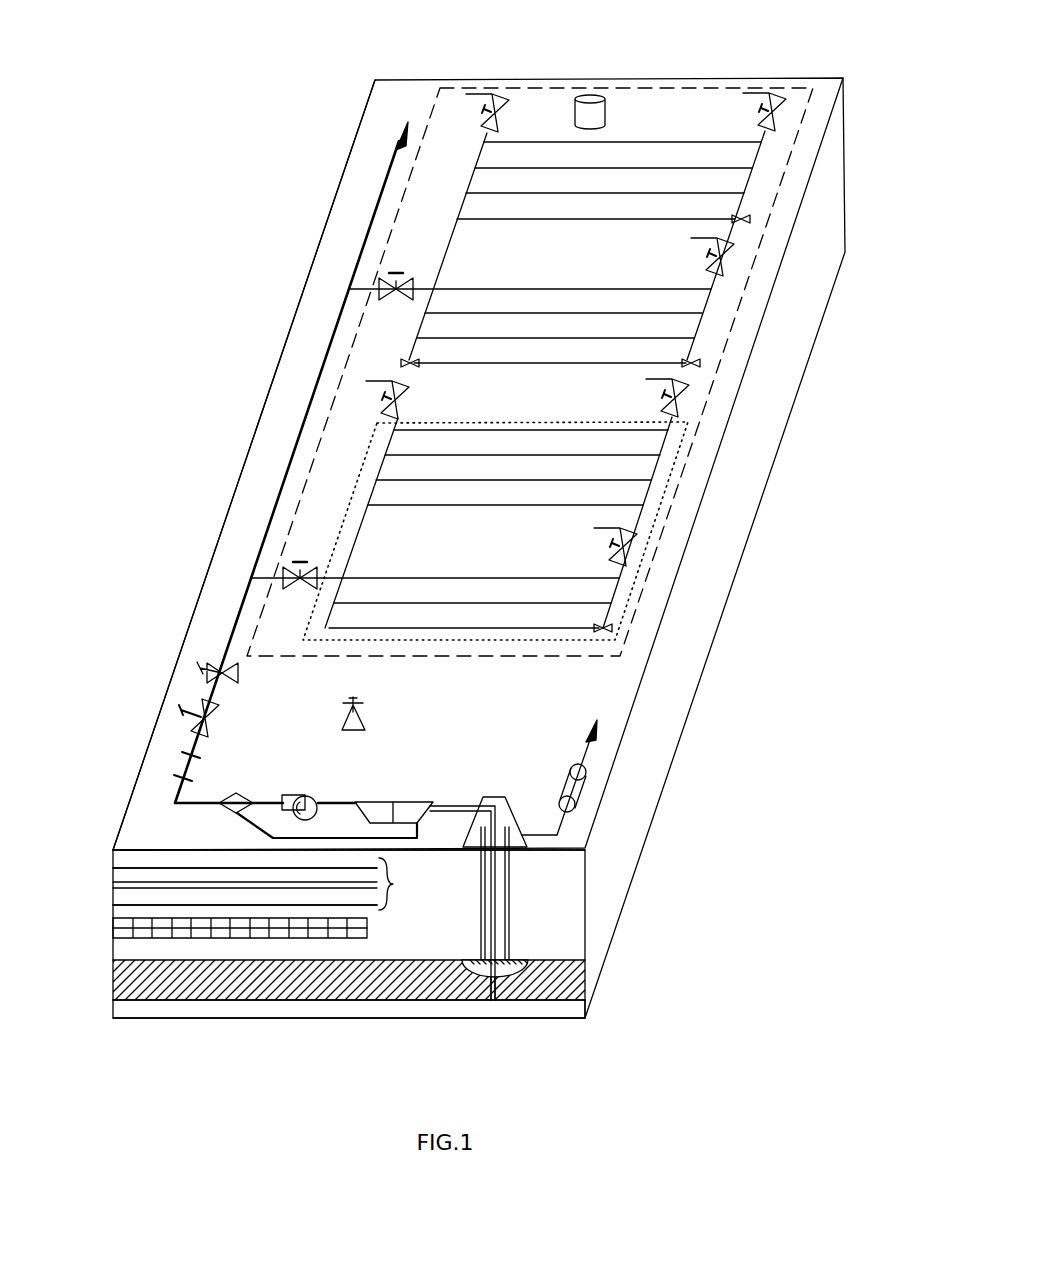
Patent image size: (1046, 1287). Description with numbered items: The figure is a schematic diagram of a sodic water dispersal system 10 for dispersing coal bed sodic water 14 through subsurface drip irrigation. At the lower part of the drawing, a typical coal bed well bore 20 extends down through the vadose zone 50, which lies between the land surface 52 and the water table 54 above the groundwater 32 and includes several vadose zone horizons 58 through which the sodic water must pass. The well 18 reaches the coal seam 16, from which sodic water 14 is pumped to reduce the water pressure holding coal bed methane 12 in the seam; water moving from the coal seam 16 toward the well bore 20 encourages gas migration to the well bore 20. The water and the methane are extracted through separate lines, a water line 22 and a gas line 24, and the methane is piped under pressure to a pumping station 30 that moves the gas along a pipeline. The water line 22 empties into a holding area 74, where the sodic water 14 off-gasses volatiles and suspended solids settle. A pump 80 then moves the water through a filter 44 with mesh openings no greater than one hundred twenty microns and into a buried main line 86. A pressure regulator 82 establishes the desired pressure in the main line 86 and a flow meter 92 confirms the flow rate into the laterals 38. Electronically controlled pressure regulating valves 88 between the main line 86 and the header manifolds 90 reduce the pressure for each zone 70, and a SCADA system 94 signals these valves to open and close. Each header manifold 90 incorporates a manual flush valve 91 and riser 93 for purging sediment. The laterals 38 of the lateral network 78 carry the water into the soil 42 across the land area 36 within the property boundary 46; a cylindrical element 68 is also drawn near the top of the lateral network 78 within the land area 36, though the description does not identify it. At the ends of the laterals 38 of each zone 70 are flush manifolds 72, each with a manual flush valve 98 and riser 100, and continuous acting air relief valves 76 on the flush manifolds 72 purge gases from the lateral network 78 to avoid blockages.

The sodic water dispersal system 10 is at (240, 508).
The coal bed methane 12 is at (468, 998).
The sodic water 14 is at (523, 955).
The coal seam 16 is at (336, 1000).
The well 18 is at (500, 797).
The well bore 20 is at (507, 860).
The water line 22 is at (458, 806).
The gas line 24 is at (537, 835).
The pumping station 30 is at (584, 790).
The groundwater 32 is at (122, 932).
The land area 36 is at (680, 86).
The laterals 38 is at (640, 168).
The soil 42 is at (125, 862).
The filter 44 is at (226, 808).
The property boundary 46 is at (257, 436).
The vadose zone 50 is at (394, 884).
The land surface 52 is at (120, 850).
The water table 54 is at (115, 919).
The vadose zone horizons 58 is at (122, 897).
The tank 68 is at (588, 98).
The zone 70 is at (543, 422).
The flush manifold 72 is at (630, 548).
The holding area 74 is at (420, 802).
The air relief valve 76 is at (610, 628).
The lateral network 78 is at (722, 137).
The pump 80 is at (302, 795).
The pressure regulator 82 is at (193, 703).
The main line 86 is at (285, 480).
The pressure regulating valve 88 is at (290, 570).
The header manifold 90 is at (404, 360).
The manual flush valve 91 is at (383, 394).
The flow meter 92 is at (182, 763).
The riser 93 is at (382, 382).
The SCADA system 94 is at (365, 720).
The manual flush valve 98 is at (682, 390).
The riser 100 is at (672, 368).